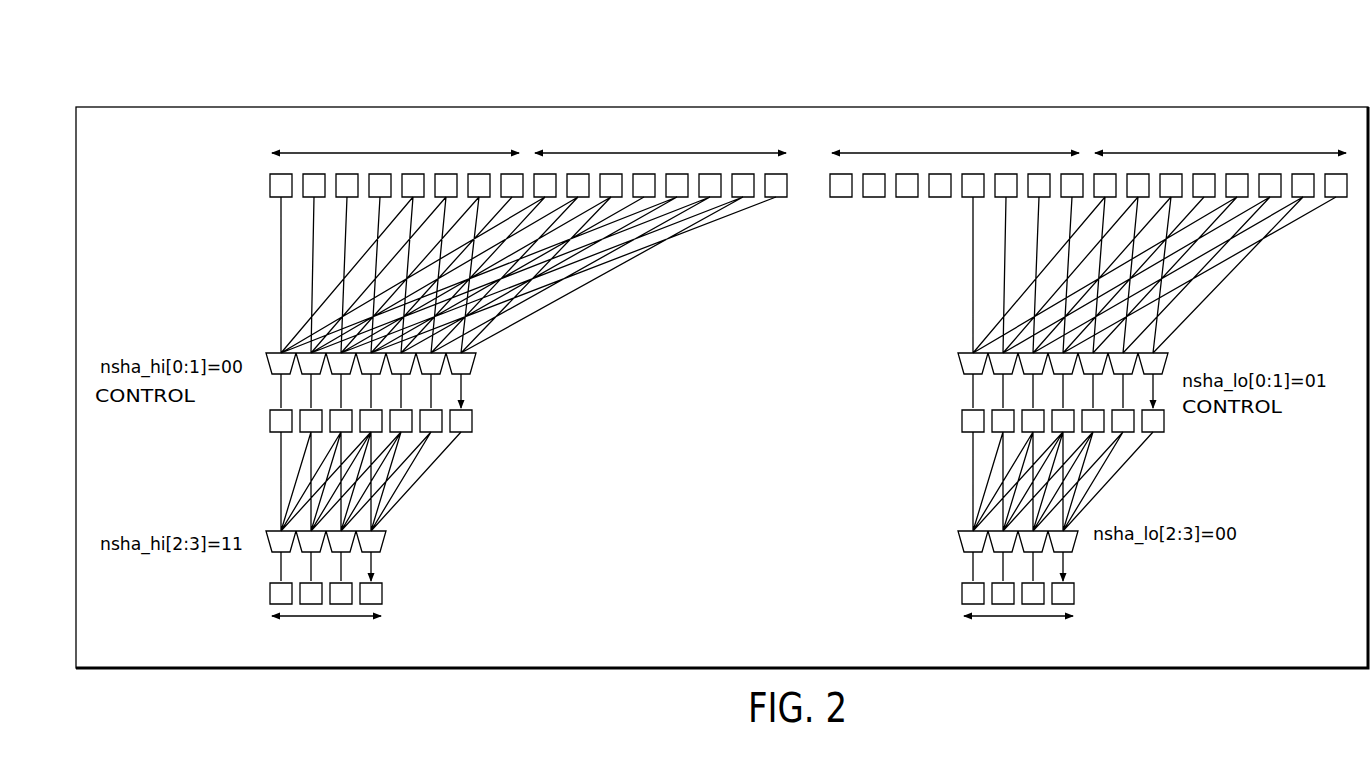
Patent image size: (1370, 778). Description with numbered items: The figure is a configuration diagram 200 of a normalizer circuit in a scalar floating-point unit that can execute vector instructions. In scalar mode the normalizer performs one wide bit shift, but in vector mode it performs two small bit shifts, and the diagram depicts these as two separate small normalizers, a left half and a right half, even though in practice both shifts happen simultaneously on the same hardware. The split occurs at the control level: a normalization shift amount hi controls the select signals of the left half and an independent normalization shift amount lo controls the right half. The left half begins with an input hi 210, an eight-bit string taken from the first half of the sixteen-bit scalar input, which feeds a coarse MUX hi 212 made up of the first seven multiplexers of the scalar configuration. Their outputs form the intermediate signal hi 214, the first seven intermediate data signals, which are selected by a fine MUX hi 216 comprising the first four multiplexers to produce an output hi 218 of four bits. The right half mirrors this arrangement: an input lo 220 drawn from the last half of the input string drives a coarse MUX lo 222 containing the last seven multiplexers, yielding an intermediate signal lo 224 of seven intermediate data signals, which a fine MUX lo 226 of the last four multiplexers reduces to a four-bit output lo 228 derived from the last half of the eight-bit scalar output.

The configuration diagram 200 is at (236, 60).
The input hi 210 is at (400, 118).
The coarse MUX hi 212 is at (472, 366).
The intermediate signal hi 214 is at (473, 422).
The fine MUX hi 216 is at (386, 548).
The output hi 218 is at (330, 648).
The input lo 220 is at (1226, 123).
The coarse MUX lo 222 is at (958, 362).
The intermediate signal lo 224 is at (962, 423).
The fine MUX lo 226 is at (958, 541).
The output lo 228 is at (1020, 652).